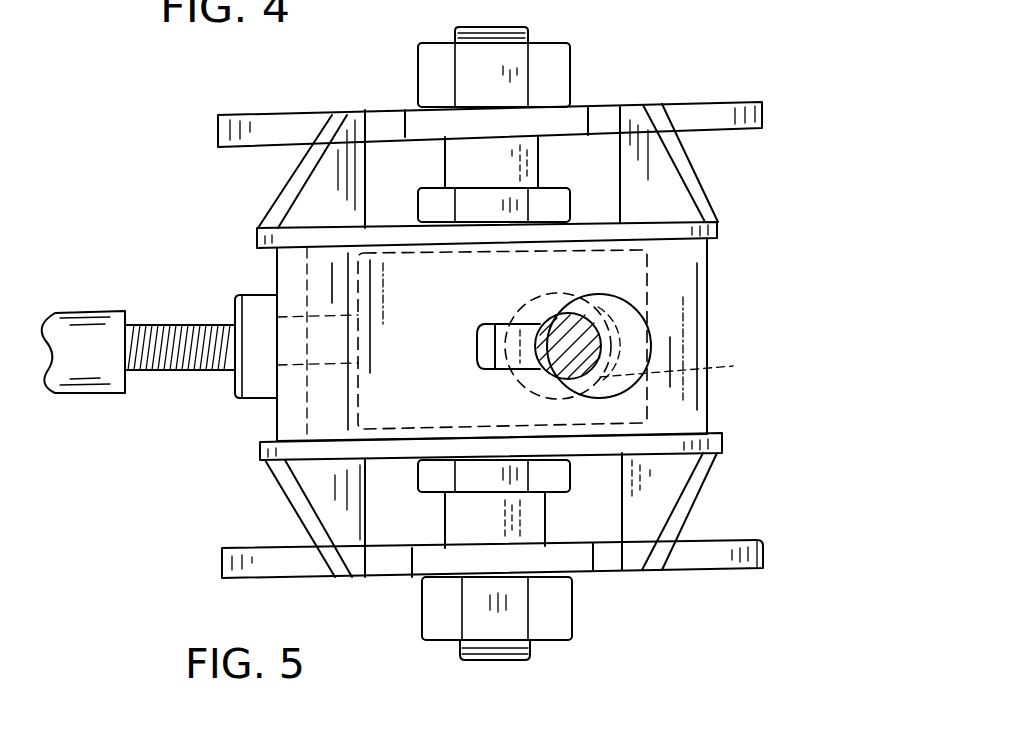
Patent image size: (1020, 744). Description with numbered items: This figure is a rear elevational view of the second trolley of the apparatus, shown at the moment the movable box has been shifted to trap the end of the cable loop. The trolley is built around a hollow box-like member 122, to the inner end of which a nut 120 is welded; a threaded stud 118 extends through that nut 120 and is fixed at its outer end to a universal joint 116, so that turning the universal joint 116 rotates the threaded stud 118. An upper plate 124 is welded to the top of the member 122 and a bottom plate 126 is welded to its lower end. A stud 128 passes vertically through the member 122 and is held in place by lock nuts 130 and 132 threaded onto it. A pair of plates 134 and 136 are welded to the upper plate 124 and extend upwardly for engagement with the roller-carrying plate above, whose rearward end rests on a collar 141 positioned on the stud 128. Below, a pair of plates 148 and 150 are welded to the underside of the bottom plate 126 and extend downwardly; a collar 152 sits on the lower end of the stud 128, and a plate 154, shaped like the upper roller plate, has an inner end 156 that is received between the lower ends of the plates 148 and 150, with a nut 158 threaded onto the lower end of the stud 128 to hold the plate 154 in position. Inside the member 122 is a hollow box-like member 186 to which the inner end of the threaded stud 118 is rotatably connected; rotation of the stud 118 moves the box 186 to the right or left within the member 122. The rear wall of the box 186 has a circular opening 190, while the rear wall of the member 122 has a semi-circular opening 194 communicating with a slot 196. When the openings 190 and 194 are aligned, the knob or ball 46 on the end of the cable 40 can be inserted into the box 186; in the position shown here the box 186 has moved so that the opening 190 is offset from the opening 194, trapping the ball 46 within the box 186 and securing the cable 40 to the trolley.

The cable 40 is at (533, 370).
The knob or ball 46 is at (690, 365).
The universal joint 116 is at (82, 312).
The threaded stud 118 is at (170, 325).
The nut 120 is at (258, 383).
The hollow box-like member 122 is at (697, 342).
The upper plate 124 is at (717, 228).
The bottom plate 126 is at (720, 450).
The stud 128 is at (525, 26).
The lock nut 130 is at (553, 210).
The lock nut 132 is at (560, 472).
The plate 134 is at (325, 182).
The plate 136 is at (640, 147).
The collar 141 is at (538, 175).
The plate 148 is at (318, 486).
The plate 150 is at (687, 463).
The collar 152 is at (548, 518).
The plate 154 is at (767, 568).
The inner end 156 is at (575, 558).
The nut 158 is at (438, 606).
The hollow box-like member 186 is at (623, 274).
The circular opening 190 is at (505, 344).
The semi-circular opening 194 is at (650, 335).
The slot 196 is at (478, 338).